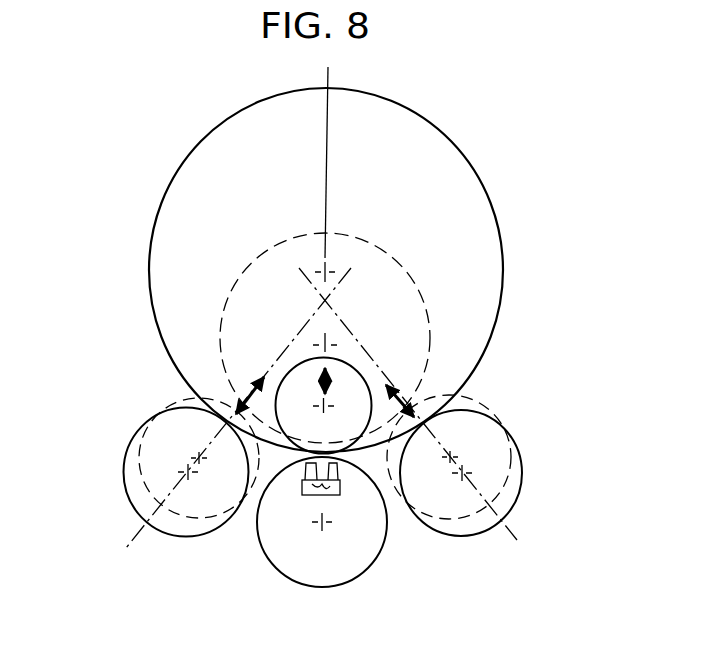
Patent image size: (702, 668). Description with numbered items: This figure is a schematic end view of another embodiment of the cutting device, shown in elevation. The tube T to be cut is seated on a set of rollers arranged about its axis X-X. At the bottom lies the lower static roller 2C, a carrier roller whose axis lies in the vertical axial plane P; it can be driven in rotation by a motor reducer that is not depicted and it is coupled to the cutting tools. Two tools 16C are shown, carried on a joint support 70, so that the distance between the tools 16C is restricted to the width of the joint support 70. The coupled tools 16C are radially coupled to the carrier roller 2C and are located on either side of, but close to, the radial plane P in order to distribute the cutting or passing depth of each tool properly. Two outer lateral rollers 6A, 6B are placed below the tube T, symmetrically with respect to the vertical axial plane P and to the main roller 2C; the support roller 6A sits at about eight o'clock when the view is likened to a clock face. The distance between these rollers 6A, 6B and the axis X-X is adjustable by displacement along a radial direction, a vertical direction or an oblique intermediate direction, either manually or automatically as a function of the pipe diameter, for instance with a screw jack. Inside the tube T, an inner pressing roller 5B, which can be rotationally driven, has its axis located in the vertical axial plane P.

The tube T is at (164, 194).
The vertical axial plane P is at (327, 181).
The X—X axis X-X is at (329, 272).
The inner pressing roller 5B is at (287, 368).
The outer lateral roller 6A is at (123, 483).
The outer lateral roller 6B is at (523, 472).
The lower static roller 2C is at (357, 565).
The cutting tool 16C is at (332, 482).
The joint support 70 is at (322, 484).